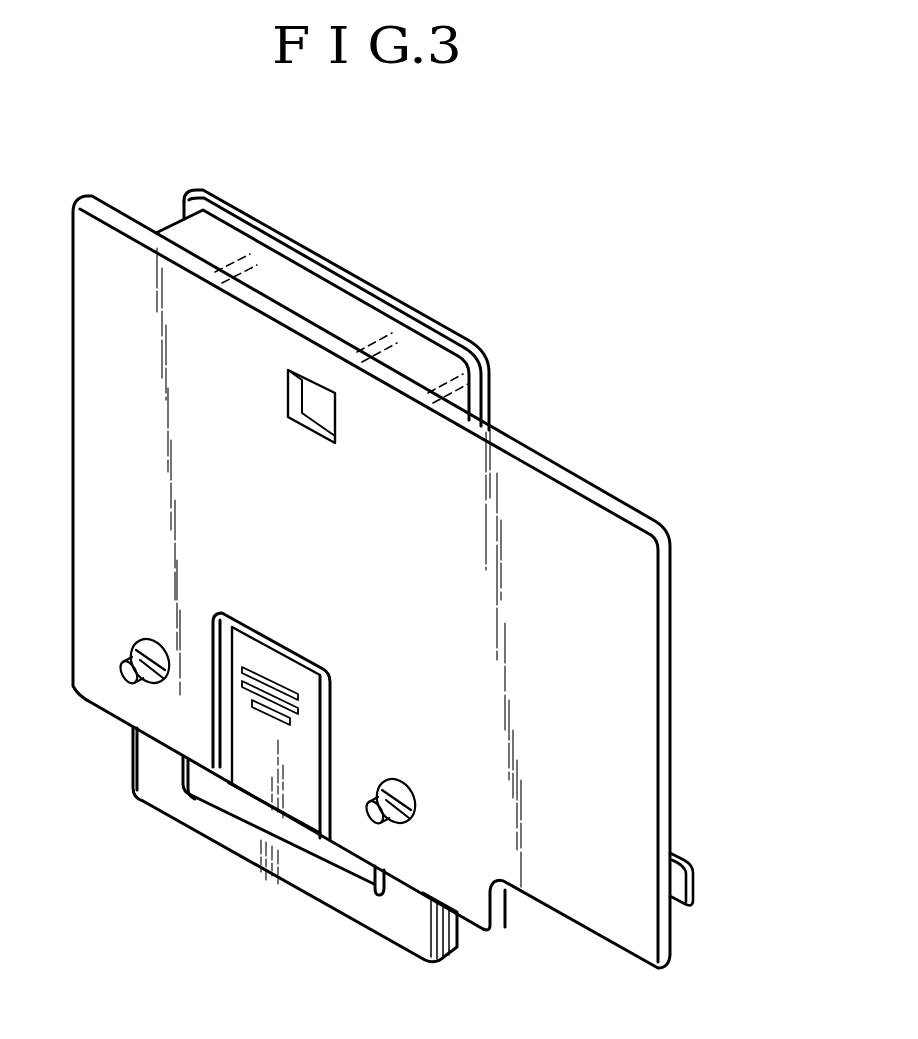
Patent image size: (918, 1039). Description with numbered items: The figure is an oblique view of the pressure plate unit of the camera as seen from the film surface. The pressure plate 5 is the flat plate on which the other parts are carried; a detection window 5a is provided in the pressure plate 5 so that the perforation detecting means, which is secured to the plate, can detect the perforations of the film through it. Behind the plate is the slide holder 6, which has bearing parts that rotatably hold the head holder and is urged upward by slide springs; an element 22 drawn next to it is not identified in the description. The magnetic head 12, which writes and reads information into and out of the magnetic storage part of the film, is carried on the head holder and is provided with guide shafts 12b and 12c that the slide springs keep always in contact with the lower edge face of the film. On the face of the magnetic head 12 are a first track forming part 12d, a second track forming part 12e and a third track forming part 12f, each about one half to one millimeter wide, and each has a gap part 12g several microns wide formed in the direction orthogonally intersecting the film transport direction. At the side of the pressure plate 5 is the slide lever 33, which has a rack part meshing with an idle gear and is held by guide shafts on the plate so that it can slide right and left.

The pressure plate 5 is at (553, 518).
The detection window 5a is at (313, 400).
The slide holder 6 is at (275, 286).
The frame 22 is at (407, 320).
The magnetic head 12 is at (252, 782).
The guide shaft 12b is at (370, 824).
The guide shaft 12c is at (122, 683).
The first track forming part 12d is at (287, 720).
The second track forming part 12e is at (300, 707).
The third track forming part 12f is at (293, 692).
The gap part 12g is at (268, 682).
The slide lever 33 is at (683, 858).